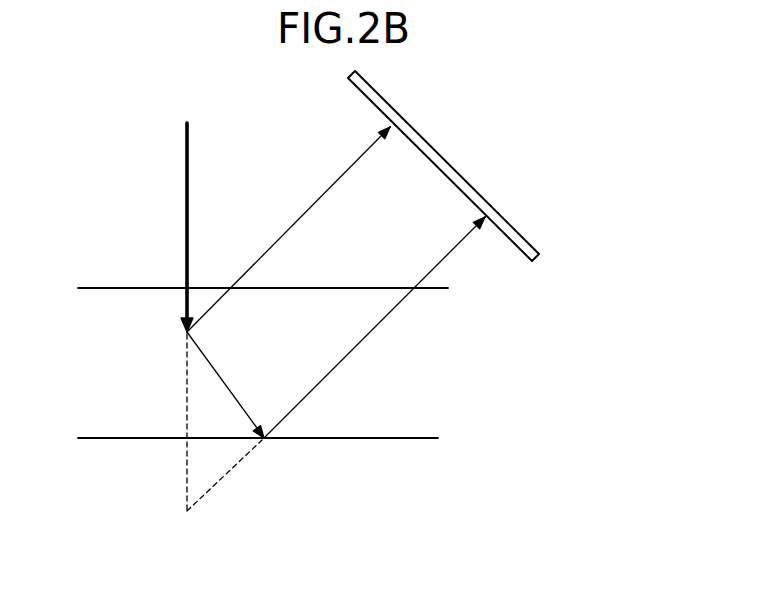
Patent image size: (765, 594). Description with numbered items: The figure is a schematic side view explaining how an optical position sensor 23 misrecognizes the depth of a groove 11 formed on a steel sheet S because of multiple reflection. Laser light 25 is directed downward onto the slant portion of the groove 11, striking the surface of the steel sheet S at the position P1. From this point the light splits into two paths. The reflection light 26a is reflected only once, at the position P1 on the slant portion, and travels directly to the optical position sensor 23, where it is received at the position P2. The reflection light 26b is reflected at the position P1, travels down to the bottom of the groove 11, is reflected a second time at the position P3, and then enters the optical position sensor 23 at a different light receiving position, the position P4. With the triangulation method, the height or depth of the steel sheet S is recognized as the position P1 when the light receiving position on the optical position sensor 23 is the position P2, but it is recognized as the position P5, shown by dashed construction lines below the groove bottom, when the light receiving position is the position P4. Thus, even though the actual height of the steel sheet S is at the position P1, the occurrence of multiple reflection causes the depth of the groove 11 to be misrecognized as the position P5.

The steel sheet S is at (95, 288).
The groove 11 is at (398, 438).
The optical position sensor 23 is at (462, 173).
The laser light 25 is at (187, 199).
The reflection light 26a is at (277, 243).
The reflection light 26b is at (358, 345).
The position P1 is at (187, 332).
The position P2 is at (389, 127).
The position P3 is at (264, 439).
The position P4 is at (487, 215).
The position P5 is at (220, 440).